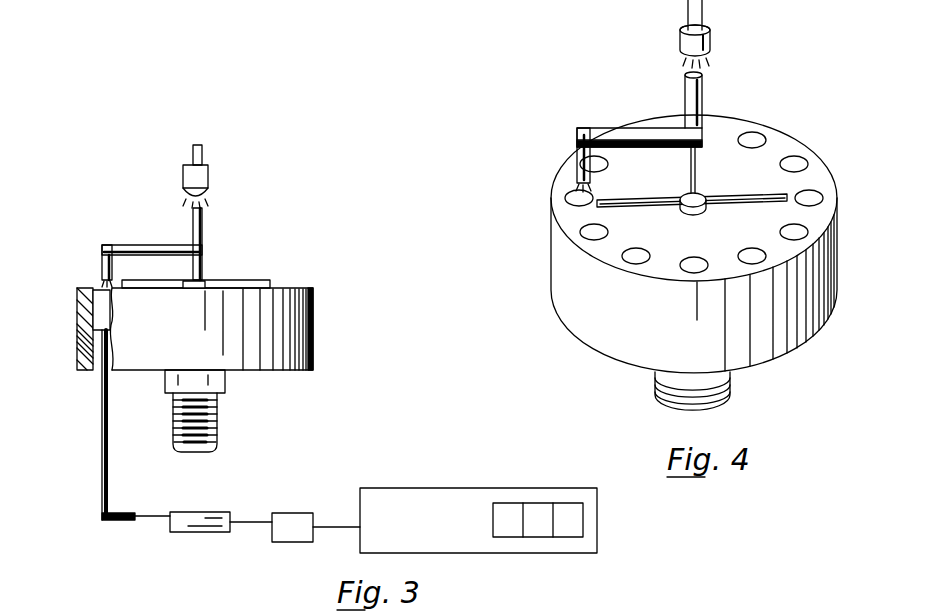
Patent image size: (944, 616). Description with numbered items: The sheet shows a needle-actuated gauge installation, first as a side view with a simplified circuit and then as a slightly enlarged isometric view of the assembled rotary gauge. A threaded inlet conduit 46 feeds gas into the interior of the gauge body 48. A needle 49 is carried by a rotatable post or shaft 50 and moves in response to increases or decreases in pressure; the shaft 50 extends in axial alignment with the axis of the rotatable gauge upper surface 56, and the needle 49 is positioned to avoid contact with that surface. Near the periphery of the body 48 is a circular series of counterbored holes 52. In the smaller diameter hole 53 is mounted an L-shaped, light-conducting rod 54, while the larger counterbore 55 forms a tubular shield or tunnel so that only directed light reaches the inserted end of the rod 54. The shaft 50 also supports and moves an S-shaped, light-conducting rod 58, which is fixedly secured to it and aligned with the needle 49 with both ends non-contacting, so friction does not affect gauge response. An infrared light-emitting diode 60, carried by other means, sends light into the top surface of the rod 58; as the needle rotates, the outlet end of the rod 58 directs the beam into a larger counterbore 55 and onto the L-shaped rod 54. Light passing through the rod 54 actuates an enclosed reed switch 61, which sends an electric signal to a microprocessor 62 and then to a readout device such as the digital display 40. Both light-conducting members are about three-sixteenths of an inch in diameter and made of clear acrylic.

In FIG. 3, the digital display 40 is at (485, 511).
In FIG. 3, the threaded inlet conduit 46 is at (217, 430).
In FIG. 4, the threaded inlet conduit 46 is at (731, 397).
In FIG. 3, the gauge body 48 is at (313, 326).
In FIG. 4, the gauge body 48 is at (572, 285).
In FIG. 3, the needle 49 is at (241, 280).
In FIG. 4, the needle 49 is at (737, 196).
In FIG. 3, the rotatable post or shaft 50 is at (203, 281).
In FIG. 4, the rotatable post or shaft 50 is at (693, 181).
In FIG. 3, the counterbored holes 52 is at (86, 305).
In FIG. 3, the smaller diameter hole 53 is at (94, 346).
In FIG. 3, the L-shaped light-conducting rod 54 is at (102, 436).
In FIG. 3, the larger counterbore 55 is at (99, 290).
In FIG. 4, the larger counterbore 55 is at (594, 236).
In FIG. 3, the rotatable gauge upper surface 56 is at (290, 289).
In FIG. 3, the S-shaped light-conducting rod 58 is at (151, 245).
In FIG. 4, the S-shaped light-conducting rod 58 is at (608, 128).
In FIG. 3, the infrared light-emitting diode 60 is at (193, 152).
In FIG. 4, the infrared light-emitting diode 60 is at (685, 18).
In FIG. 3, the enclosed reed switch 61 is at (180, 512).
In FIG. 3, the microprocessor 62 is at (297, 513).